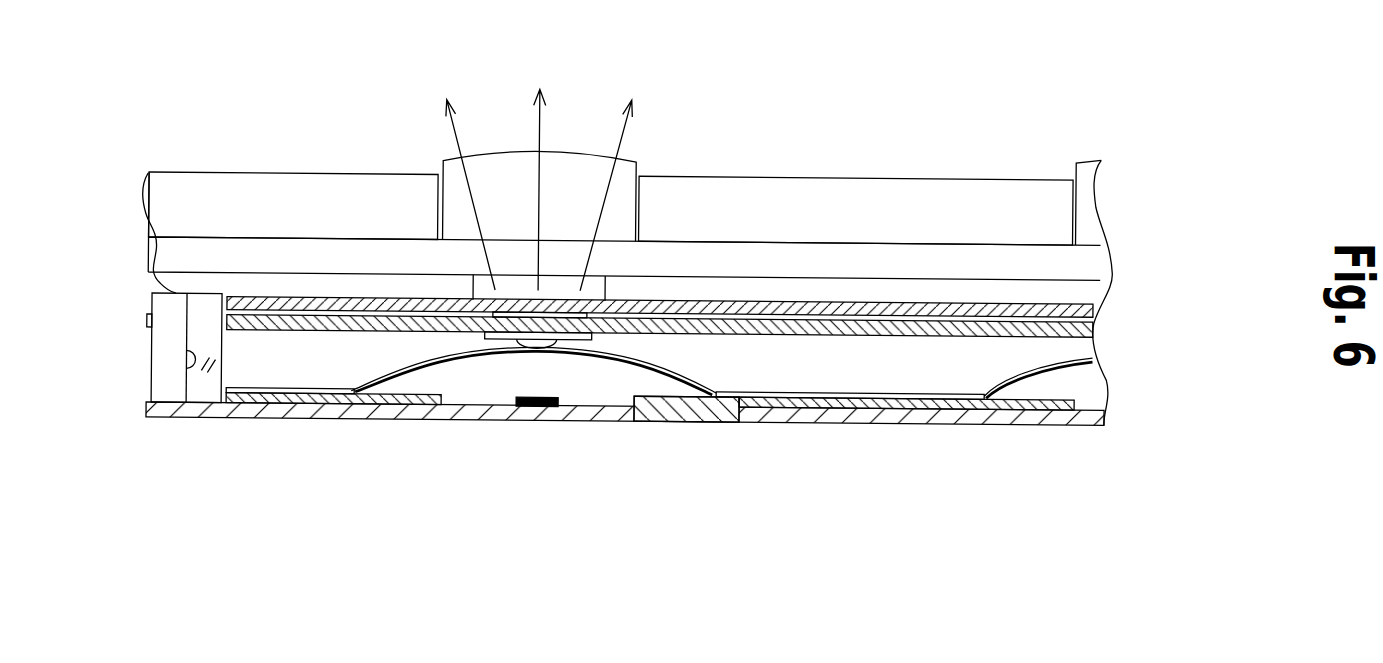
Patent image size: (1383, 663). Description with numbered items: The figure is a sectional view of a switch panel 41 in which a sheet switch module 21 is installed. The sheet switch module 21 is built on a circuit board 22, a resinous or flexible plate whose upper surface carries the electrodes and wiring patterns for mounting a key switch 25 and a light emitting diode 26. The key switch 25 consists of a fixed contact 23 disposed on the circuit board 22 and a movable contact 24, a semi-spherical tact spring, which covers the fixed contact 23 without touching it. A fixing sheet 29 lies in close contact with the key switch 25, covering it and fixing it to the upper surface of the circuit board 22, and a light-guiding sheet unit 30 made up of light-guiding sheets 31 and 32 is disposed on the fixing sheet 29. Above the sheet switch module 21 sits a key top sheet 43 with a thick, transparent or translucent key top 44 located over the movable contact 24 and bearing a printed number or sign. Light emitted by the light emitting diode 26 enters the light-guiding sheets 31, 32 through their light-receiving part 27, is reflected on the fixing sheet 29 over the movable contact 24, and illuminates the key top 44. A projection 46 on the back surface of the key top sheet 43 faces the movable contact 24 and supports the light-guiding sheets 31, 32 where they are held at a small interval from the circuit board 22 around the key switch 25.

The sheet switch module 21 is at (125, 292).
The circuit board 22 is at (160, 417).
The fixed contact 23 is at (540, 403).
The movable contact 24 is at (463, 359).
The key switch 25 is at (631, 322).
The light emitting diode 26 is at (175, 238).
The light-receiving part 27 is at (227, 330).
The fixing sheet 29 is at (703, 370).
The light-guiding sheet unit 30 is at (868, 264).
The light-guiding sheet 31 is at (1095, 322).
The light-guiding sheet 32 is at (1098, 300).
The switch panel 41 is at (1020, 103).
The key top sheet 43 is at (265, 186).
The key top 44 is at (563, 152).
The projection 46 is at (467, 283).